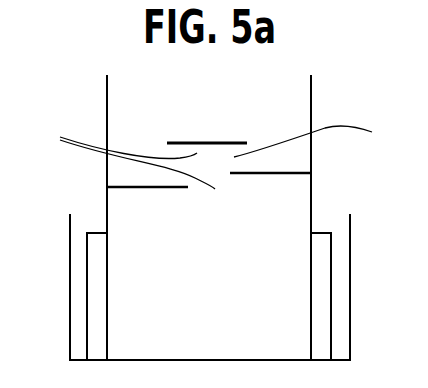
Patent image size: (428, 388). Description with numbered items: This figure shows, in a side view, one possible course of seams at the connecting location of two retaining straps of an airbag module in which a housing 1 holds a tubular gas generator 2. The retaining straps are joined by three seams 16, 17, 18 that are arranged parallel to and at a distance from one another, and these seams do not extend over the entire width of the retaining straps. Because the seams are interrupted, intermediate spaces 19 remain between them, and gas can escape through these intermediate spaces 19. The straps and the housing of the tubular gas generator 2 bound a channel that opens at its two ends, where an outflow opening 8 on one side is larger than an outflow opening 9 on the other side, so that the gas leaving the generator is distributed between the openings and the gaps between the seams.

The housing 1 is at (351, 244).
The tubular gas generator 2 is at (317, 334).
The outflow opening 8 is at (312, 208).
The outflow opening 9 is at (107, 203).
The seam 16 is at (202, 141).
The seam 17 is at (142, 188).
The seam 18 is at (253, 175).
The intermediate spaces 19 is at (218, 154).